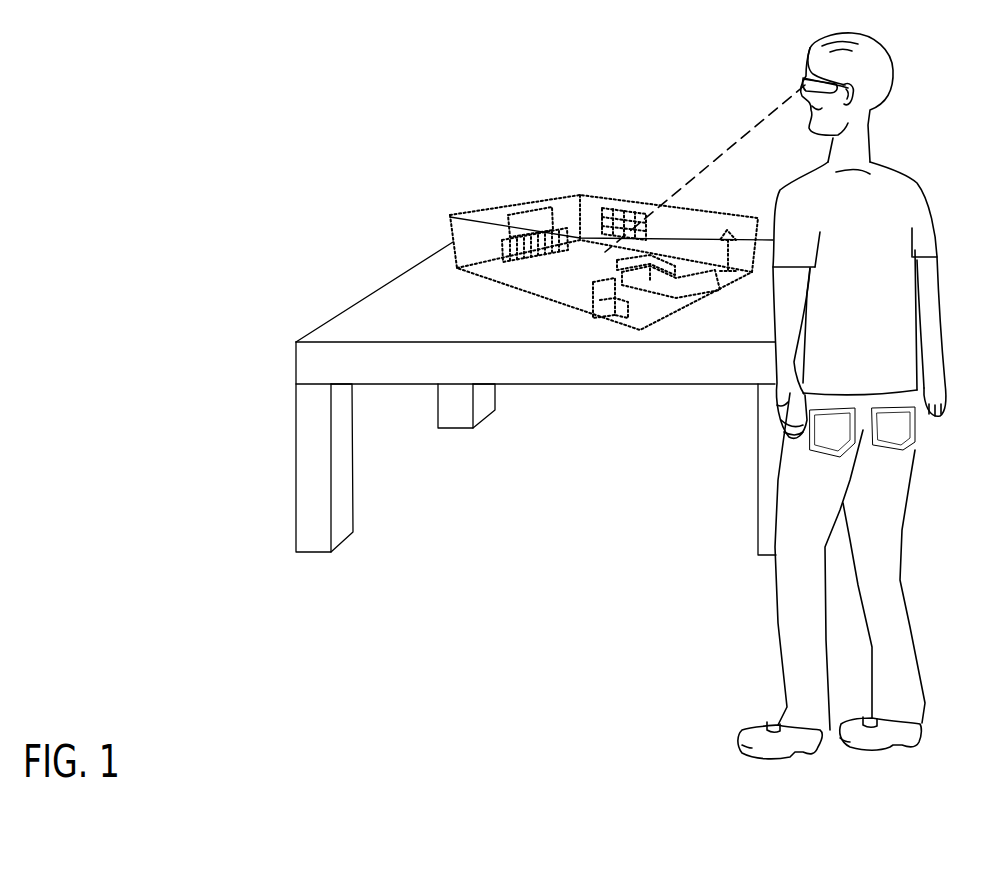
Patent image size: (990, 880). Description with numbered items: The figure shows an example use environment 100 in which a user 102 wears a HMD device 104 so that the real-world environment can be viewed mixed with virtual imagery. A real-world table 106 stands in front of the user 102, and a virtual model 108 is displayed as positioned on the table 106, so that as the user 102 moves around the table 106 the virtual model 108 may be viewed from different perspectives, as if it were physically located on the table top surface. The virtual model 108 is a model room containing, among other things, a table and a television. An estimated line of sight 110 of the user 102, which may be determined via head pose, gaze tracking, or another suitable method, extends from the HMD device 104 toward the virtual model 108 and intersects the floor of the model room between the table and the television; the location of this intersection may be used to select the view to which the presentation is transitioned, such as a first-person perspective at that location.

The use environment 100 is at (358, 48).
The user 102 is at (879, 251).
The HMD device 104 is at (810, 79).
The table 106 is at (332, 295).
The virtual model 108 is at (566, 176).
The estimated line of sight 110 is at (716, 160).